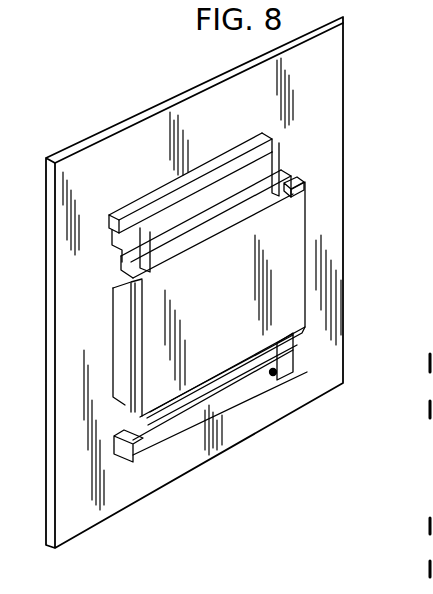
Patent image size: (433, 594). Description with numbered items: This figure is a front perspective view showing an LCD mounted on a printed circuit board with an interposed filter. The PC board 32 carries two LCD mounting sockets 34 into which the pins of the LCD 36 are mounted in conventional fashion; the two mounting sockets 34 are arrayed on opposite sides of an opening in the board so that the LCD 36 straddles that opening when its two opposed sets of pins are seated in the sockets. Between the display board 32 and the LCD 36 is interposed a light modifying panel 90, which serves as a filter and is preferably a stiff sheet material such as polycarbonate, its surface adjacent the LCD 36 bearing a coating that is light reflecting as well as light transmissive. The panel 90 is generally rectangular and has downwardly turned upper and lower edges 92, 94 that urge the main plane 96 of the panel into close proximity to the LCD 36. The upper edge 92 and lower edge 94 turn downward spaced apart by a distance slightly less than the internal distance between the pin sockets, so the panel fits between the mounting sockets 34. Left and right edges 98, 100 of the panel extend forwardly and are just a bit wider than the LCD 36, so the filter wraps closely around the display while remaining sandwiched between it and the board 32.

The PC board 32 is at (194, 282).
The LCD mounting sockets 34 is at (220, 160).
The LCD 36 is at (229, 320).
The light modifying panel 90 is at (137, 254).
The upper edge 92 is at (277, 163).
The lower edge 94 is at (131, 457).
The main plane 96 is at (257, 220).
The left edge 98 is at (120, 347).
The right edge 100 is at (300, 187).